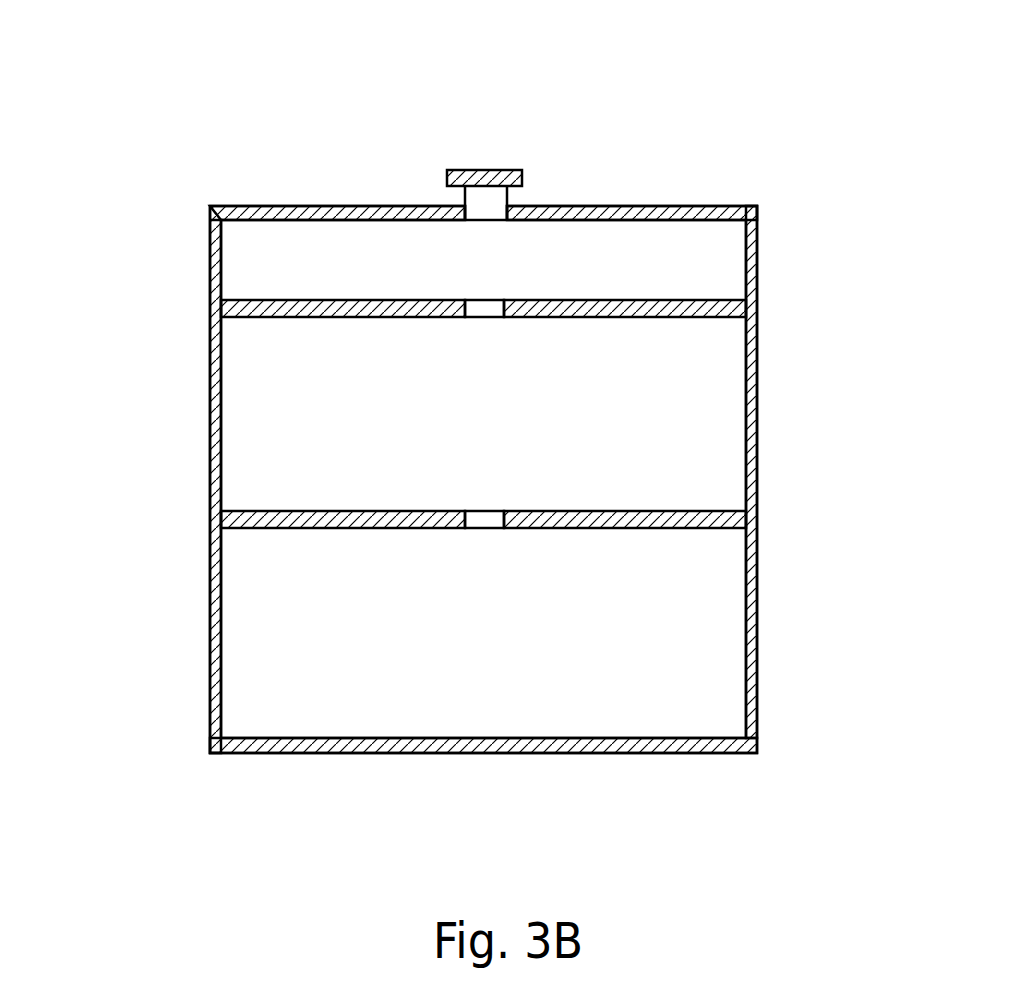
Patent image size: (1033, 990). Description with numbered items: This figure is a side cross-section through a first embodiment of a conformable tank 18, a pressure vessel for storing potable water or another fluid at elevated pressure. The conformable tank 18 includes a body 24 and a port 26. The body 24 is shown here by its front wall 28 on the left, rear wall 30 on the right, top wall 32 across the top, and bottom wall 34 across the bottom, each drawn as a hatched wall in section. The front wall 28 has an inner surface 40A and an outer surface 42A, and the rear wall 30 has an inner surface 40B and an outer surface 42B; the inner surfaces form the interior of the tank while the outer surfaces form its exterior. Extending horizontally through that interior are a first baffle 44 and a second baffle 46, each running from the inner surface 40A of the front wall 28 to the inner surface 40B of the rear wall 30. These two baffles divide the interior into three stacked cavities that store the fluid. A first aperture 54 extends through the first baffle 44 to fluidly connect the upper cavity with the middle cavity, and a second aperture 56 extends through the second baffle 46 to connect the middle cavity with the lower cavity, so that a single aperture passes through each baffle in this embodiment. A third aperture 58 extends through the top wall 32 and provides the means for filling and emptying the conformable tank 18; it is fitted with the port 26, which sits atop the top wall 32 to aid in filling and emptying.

The conformable tank 18 is at (835, 168).
The body 24 is at (222, 128).
The port 26 is at (483, 178).
The front wall 28 is at (215, 660).
The rear wall 30 is at (757, 557).
The top wall 32 is at (670, 205).
The bottom wall 34 is at (490, 750).
The inner surface 40A is at (225, 410).
The inner surface 40B is at (745, 375).
The outer surface 42A is at (210, 483).
The outer surface 42B is at (760, 470).
The first baffle 44 is at (333, 305).
The second baffle 46 is at (333, 528).
The first aperture 54 is at (486, 310).
The second aperture 56 is at (485, 518).
The third aperture 58 is at (482, 220).